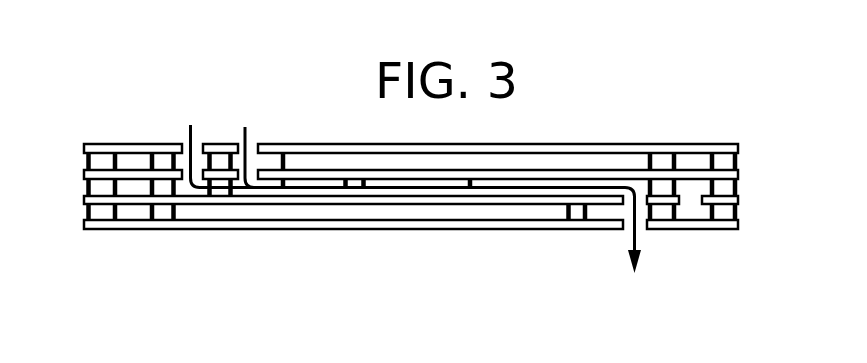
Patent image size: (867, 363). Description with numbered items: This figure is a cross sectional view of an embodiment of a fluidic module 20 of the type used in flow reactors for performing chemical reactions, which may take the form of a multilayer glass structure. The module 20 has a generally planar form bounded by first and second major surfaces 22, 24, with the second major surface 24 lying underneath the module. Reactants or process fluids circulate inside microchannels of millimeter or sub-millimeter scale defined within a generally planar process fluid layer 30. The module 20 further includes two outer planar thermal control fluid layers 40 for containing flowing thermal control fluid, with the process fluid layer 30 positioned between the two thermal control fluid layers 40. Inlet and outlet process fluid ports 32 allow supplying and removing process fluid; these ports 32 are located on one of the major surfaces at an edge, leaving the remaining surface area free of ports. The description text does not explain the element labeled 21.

The fluidic module 20 is at (211, 259).
The inner layer 21 is at (376, 190).
The first major surface 22 is at (662, 143).
The second major surface 24 is at (555, 232).
The process fluid layer 30 is at (748, 167).
The process fluid ports 32 is at (173, 127).
The thermal control fluid layers 40 is at (77, 145).